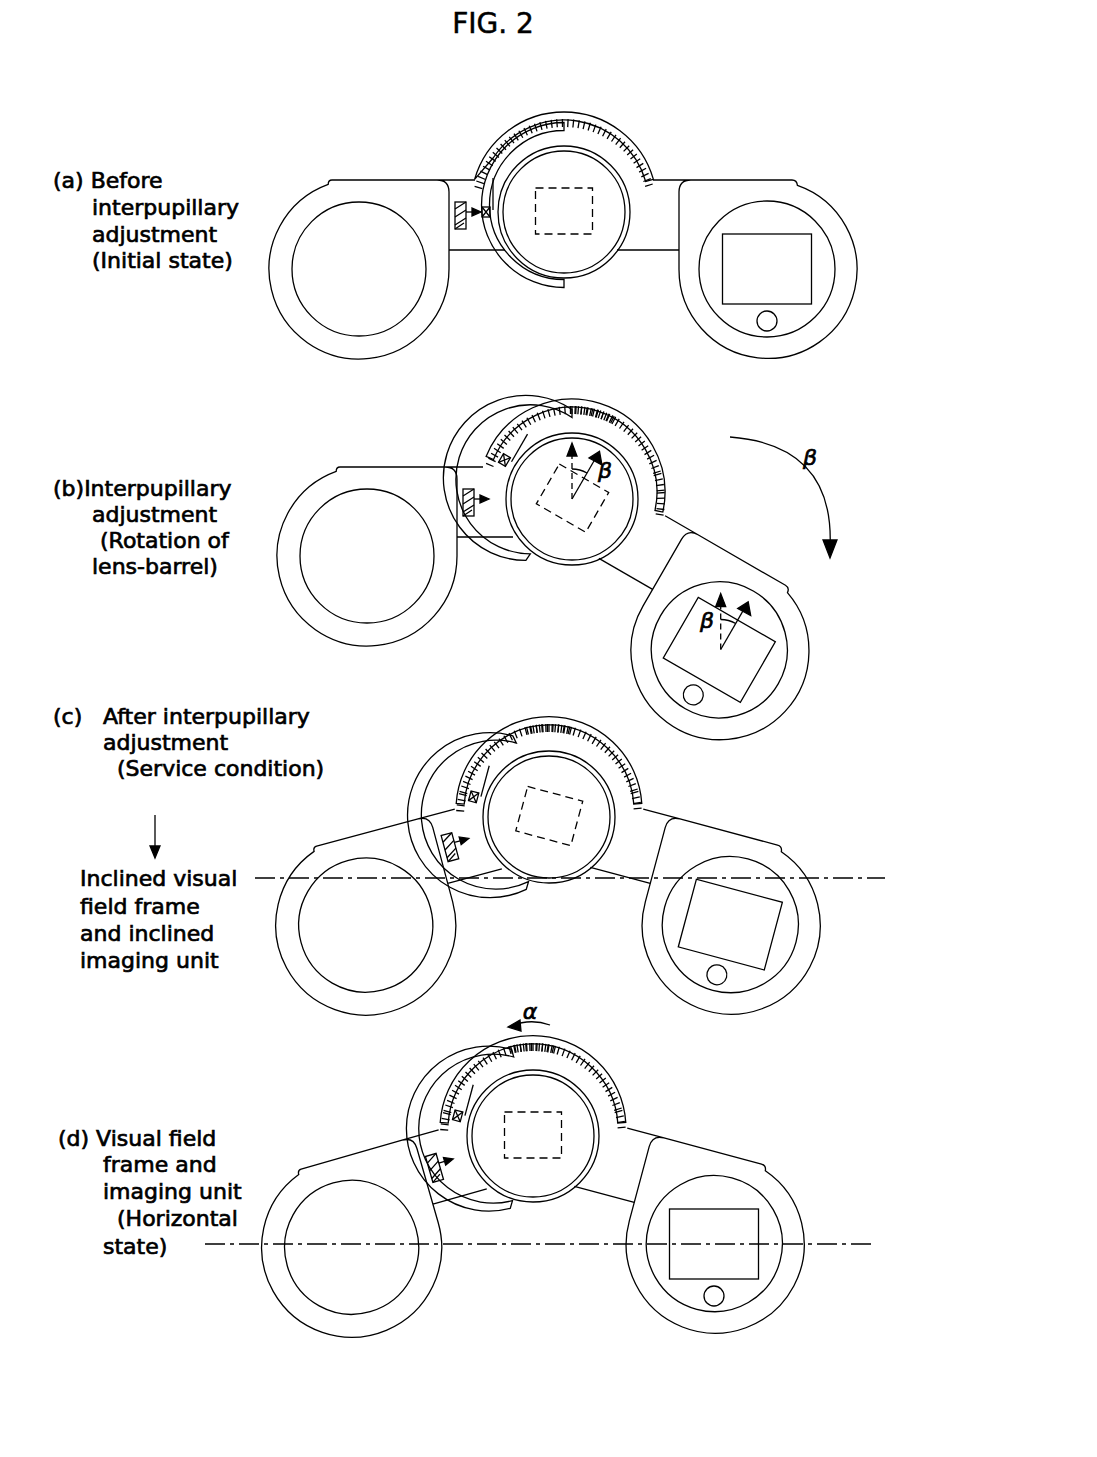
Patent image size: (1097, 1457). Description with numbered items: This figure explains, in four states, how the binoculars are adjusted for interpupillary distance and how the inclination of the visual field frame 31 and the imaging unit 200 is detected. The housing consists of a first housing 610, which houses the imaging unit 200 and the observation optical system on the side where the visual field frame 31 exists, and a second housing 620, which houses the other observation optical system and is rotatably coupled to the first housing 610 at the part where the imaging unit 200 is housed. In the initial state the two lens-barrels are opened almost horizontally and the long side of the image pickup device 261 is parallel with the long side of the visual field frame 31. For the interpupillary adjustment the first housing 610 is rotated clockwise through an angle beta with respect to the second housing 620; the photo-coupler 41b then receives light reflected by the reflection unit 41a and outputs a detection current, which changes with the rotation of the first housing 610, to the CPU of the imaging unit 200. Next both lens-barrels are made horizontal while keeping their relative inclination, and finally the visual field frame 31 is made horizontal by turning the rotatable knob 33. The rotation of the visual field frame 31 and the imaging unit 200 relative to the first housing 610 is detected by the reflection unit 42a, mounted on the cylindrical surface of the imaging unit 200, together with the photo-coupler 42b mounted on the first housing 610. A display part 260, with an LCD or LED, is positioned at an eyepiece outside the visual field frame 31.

The visual field frame 31 is at (780, 233).
The rotatable knob 33 is at (613, 120).
The reflection unit 41a is at (478, 210).
The photo-coupler 41b is at (460, 203).
The reflection unit 42a is at (493, 153).
The photo-coupler 42b is at (482, 158).
The imaging unit 200 is at (630, 207).
The display part 260 is at (778, 320).
The image pickup device 261 is at (575, 223).
The first housing 610 is at (643, 243).
The second housing 620 is at (468, 243).